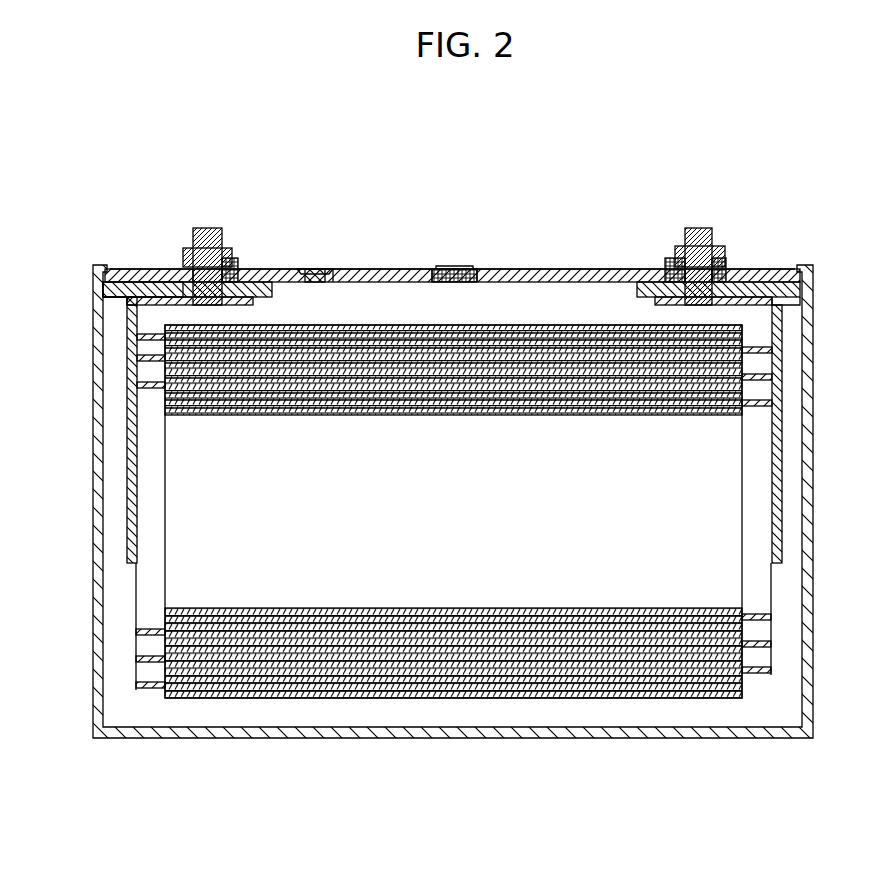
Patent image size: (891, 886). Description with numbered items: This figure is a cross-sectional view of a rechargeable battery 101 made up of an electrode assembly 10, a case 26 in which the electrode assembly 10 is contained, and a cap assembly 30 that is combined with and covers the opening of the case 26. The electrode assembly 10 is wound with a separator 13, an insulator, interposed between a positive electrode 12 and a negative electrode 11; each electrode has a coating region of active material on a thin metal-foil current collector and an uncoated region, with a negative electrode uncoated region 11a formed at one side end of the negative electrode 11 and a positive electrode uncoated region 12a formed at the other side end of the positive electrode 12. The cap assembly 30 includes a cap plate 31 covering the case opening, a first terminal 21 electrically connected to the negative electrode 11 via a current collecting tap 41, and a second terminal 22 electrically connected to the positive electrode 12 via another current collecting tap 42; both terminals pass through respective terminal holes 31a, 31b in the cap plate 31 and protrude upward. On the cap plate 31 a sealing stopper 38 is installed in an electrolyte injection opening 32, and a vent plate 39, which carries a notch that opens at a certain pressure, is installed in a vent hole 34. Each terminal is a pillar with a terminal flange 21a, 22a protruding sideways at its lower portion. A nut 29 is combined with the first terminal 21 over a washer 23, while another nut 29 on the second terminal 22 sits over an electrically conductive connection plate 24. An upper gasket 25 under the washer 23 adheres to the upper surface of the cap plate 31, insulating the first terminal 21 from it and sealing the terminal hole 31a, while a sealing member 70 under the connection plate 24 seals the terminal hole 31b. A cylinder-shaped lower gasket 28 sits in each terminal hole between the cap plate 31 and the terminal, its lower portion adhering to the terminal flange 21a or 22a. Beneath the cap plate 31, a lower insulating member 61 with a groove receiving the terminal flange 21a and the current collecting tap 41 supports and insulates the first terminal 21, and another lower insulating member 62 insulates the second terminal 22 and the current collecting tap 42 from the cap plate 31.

The rechargeable battery 101 is at (435, 127).
The electrode assembly 10 is at (578, 576).
The negative electrode 11 is at (268, 699).
The negative electrode uncoated region 11a is at (146, 692).
The positive electrode 12 is at (320, 699).
The positive electrode uncoated region 12a is at (758, 676).
The separator 13 is at (448, 699).
The first terminal 21 is at (204, 242).
The terminal flange 21a is at (257, 299).
The second terminal 22 is at (699, 233).
The terminal flange 22a is at (646, 287).
The washer 23 is at (237, 260).
The connection plate 24 is at (672, 262).
The upper gasket 25 is at (161, 270).
The case 26 is at (808, 443).
The lower gasket 28 is at (141, 270).
The nut 29 is at (187, 262).
The cap assembly 30 is at (399, 270).
The cap plate 31 is at (524, 277).
The terminal hole 31a is at (215, 229).
The terminal hole 31b is at (690, 238).
The electrolyte injection opening 32 is at (324, 282).
The vent hole 34 is at (452, 283).
The sealing stopper 38 is at (313, 267).
The vent plate 39 is at (470, 270).
The current collecting tap 41 is at (128, 465).
The current collecting tap 42 is at (783, 500).
The lower insulating member 61 is at (108, 293).
The lower insulating member 62 is at (788, 300).
The sealing member 70 is at (728, 268).